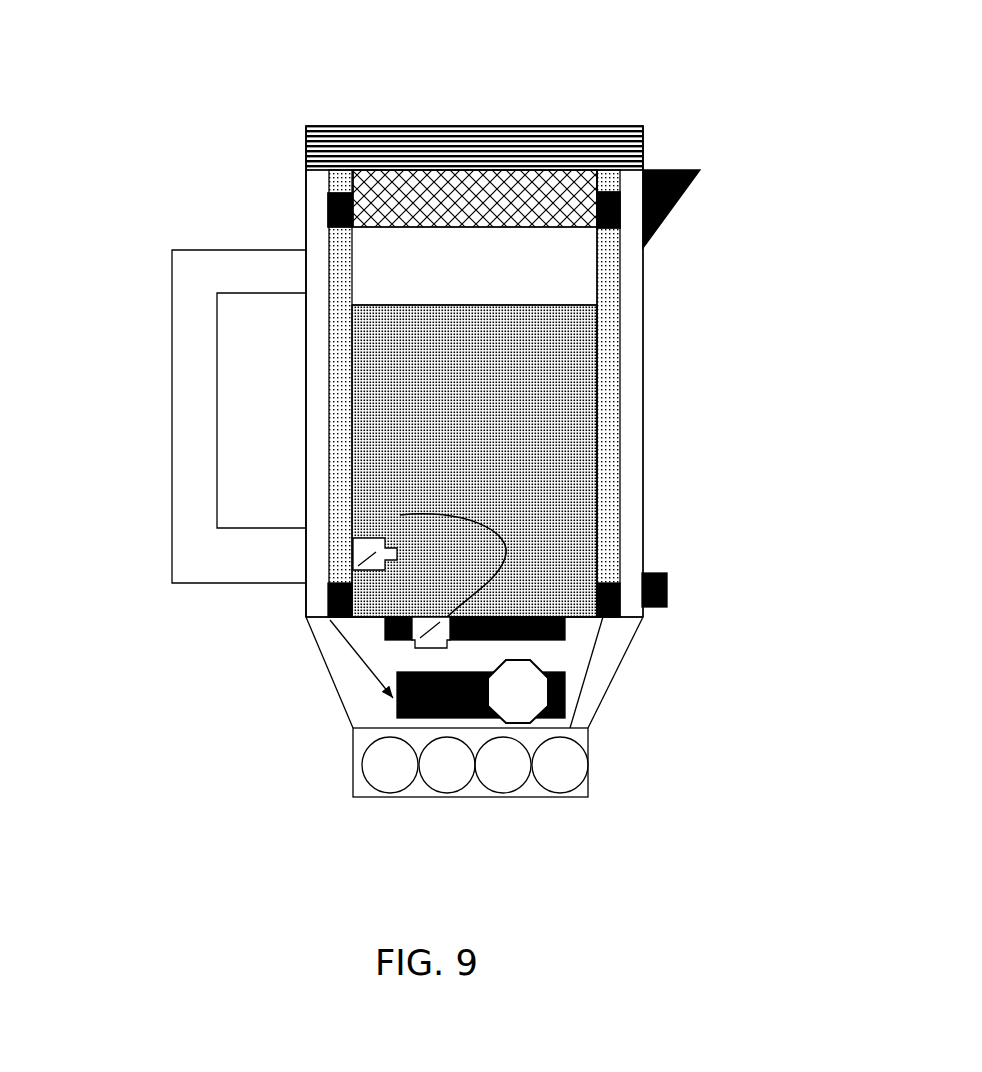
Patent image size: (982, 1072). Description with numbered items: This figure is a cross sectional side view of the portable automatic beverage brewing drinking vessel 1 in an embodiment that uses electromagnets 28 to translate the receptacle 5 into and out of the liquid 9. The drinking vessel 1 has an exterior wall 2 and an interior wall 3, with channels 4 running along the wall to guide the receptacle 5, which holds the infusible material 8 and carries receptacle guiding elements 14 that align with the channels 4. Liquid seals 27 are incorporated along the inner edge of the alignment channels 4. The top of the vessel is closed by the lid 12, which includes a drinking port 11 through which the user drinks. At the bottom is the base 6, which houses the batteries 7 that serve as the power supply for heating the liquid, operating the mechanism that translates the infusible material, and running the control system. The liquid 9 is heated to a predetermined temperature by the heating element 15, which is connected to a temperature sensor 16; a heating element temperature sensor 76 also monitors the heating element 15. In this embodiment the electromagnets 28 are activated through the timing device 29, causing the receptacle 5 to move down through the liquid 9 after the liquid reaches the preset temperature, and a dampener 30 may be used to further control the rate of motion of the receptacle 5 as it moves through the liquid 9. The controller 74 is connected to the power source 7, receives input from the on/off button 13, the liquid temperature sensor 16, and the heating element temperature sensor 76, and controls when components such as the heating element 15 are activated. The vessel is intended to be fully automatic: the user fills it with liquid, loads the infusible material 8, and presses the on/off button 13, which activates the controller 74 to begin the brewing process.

The drinking vessel 1 is at (688, 90).
The exterior wall 2 is at (643, 440).
The interior wall 3 is at (597, 507).
The channels 4 is at (343, 438).
The receptacle 5 is at (567, 182).
The base 6 is at (600, 672).
The batteries 7 is at (643, 148).
The infusible material 8 is at (473, 200).
The liquid 9 is at (380, 327).
The drinking port 11 is at (688, 193).
The lid 12 is at (348, 123).
The on/off button 13 is at (667, 583).
The receptacle guiding elements 14 is at (357, 207).
The heating element 15 is at (570, 630).
The temperature sensor 16 is at (357, 568).
The liquid seals 27 is at (598, 405).
The electromagnets 28 is at (324, 200).
The timing device 29 is at (390, 700).
The dampener 30 is at (338, 258).
The controller 74 is at (500, 693).
The heating element temperature sensor 76 is at (400, 513).